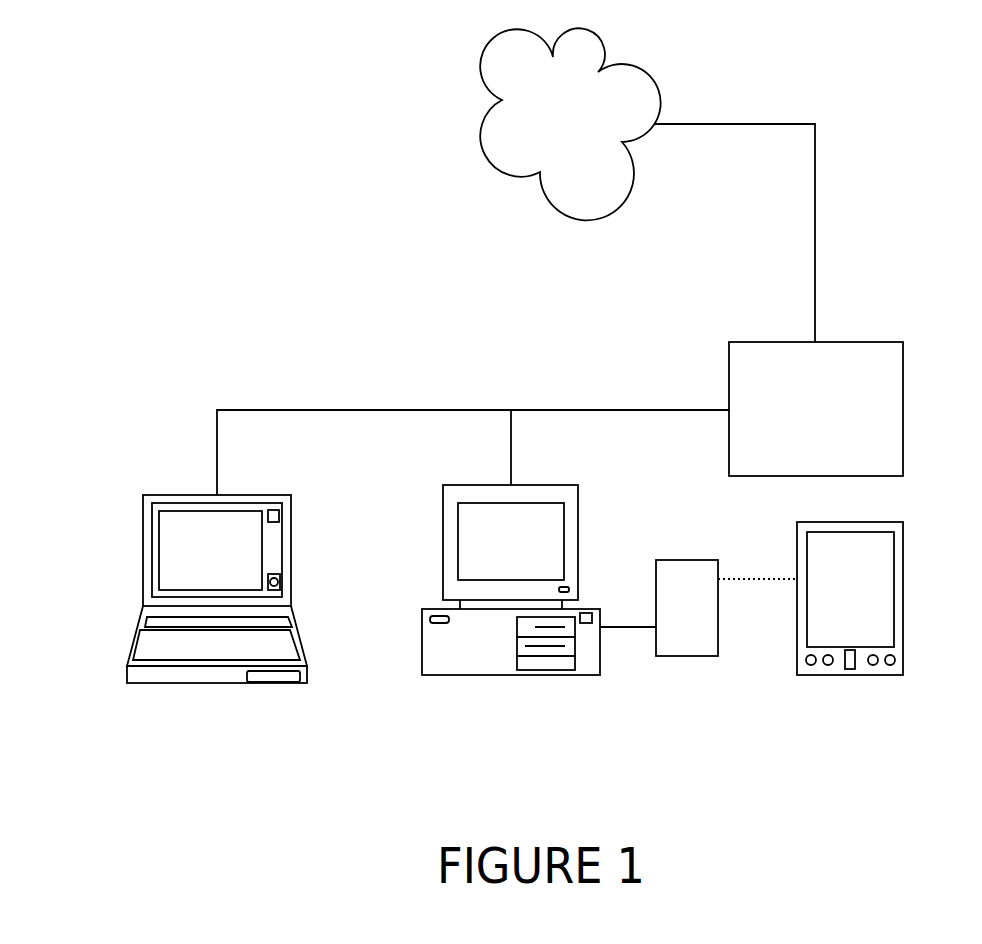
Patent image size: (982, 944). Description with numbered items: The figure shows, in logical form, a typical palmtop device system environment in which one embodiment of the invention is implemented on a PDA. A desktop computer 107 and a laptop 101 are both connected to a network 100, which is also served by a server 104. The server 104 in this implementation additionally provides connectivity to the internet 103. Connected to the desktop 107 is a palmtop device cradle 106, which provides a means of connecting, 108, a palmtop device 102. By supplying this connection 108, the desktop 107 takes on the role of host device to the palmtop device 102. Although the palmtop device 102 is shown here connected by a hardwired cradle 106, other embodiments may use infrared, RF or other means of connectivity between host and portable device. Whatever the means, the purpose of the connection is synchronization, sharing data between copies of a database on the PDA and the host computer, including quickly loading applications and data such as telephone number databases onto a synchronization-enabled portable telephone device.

The network 100 is at (322, 410).
The laptop 101 is at (262, 495).
The palmtop device 102 is at (904, 560).
The internet 103 is at (588, 134).
The server 104 is at (867, 342).
The palmtop device cradle 106 is at (676, 560).
The desktop computer 107 is at (577, 515).
The connection 108 is at (763, 579).